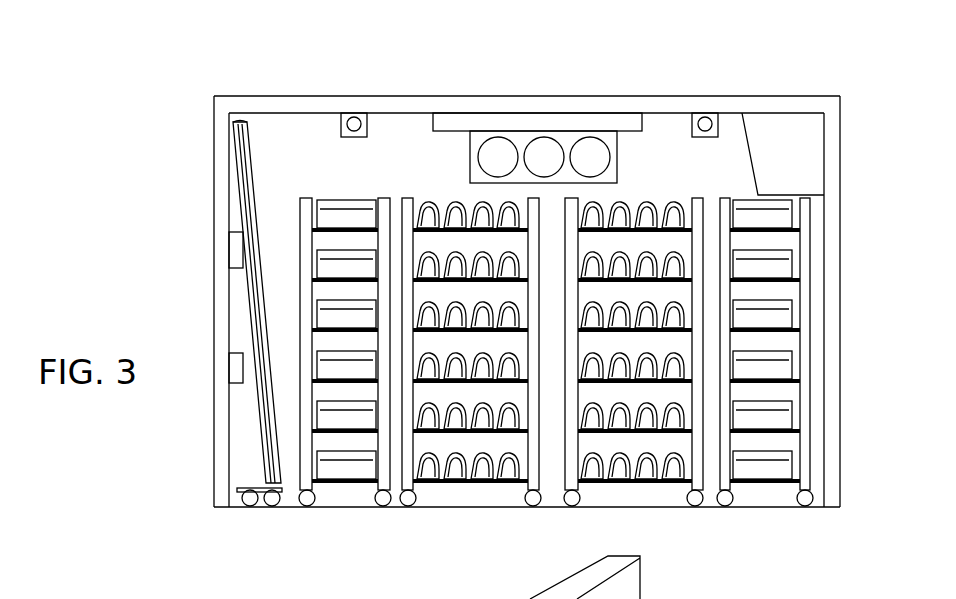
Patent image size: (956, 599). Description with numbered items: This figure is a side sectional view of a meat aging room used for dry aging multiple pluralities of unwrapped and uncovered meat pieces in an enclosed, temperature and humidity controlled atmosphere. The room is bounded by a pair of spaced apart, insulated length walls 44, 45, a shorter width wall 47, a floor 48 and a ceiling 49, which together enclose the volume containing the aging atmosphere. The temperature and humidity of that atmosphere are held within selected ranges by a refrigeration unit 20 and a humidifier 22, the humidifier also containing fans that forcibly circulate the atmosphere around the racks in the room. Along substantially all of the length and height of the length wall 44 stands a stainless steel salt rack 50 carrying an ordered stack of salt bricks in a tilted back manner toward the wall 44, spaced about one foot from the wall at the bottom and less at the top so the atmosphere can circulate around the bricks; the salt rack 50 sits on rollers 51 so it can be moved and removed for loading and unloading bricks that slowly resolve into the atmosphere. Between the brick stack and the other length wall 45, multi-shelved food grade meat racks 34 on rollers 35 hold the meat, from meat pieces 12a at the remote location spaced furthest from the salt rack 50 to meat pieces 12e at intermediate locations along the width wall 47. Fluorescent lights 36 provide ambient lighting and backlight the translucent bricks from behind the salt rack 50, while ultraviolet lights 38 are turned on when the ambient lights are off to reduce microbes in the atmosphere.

The refrigeration unit 20 is at (787, 148).
The humidifier 22 is at (524, 113).
The meat rack 34 is at (345, 376).
The rollers 35 is at (305, 505).
The fluorescent lights 36 is at (238, 253).
The ultraviolet lights 38 is at (345, 113).
The length wall 44 is at (218, 175).
The length wall 45 is at (837, 255).
The width wall 47 is at (683, 173).
The floor 48 is at (527, 528).
The ceiling 49 is at (583, 103).
The salt rack 50 is at (230, 132).
The rollers 51 is at (232, 507).
The meat pieces 12a is at (787, 268).
The meat pieces 12e is at (515, 482).